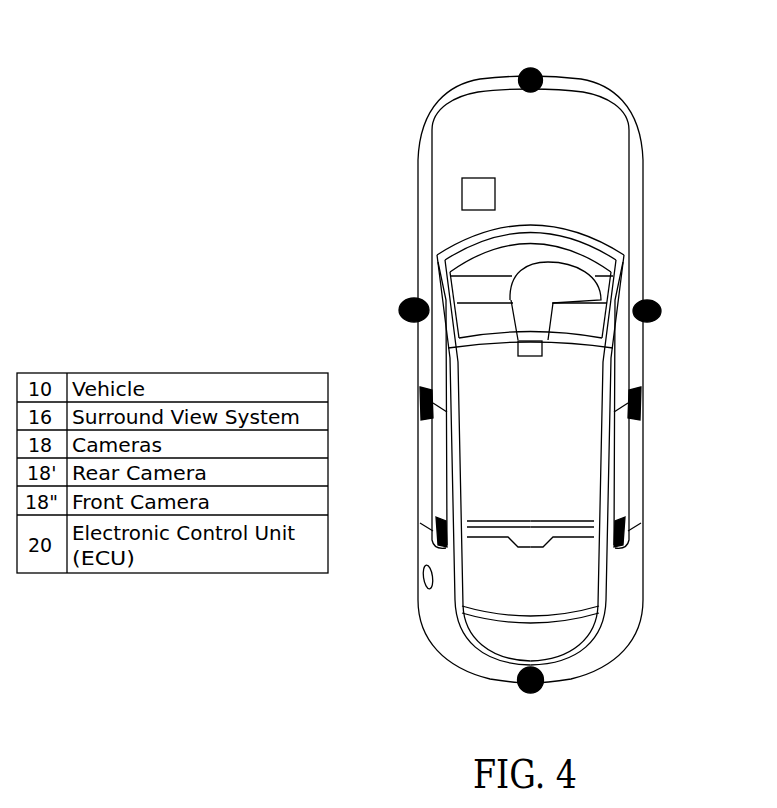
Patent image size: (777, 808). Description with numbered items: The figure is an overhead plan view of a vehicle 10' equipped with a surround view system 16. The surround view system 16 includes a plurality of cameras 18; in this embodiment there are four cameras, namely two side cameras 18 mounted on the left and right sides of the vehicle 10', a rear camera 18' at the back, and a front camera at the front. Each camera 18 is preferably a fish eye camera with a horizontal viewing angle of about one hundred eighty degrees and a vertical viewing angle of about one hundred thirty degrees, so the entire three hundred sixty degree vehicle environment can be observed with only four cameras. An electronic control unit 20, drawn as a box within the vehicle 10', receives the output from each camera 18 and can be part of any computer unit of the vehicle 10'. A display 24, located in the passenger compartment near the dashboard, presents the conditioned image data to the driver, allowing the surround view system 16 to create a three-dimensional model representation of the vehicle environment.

The vehicle 10' is at (504, 379).
The surround view system 16 is at (530, 382).
The cameras 18 is at (530, 314).
The rear camera 18' is at (535, 704).
The electronic control unit (ECU) 20 is at (495, 192).
The display 24 is at (533, 357).